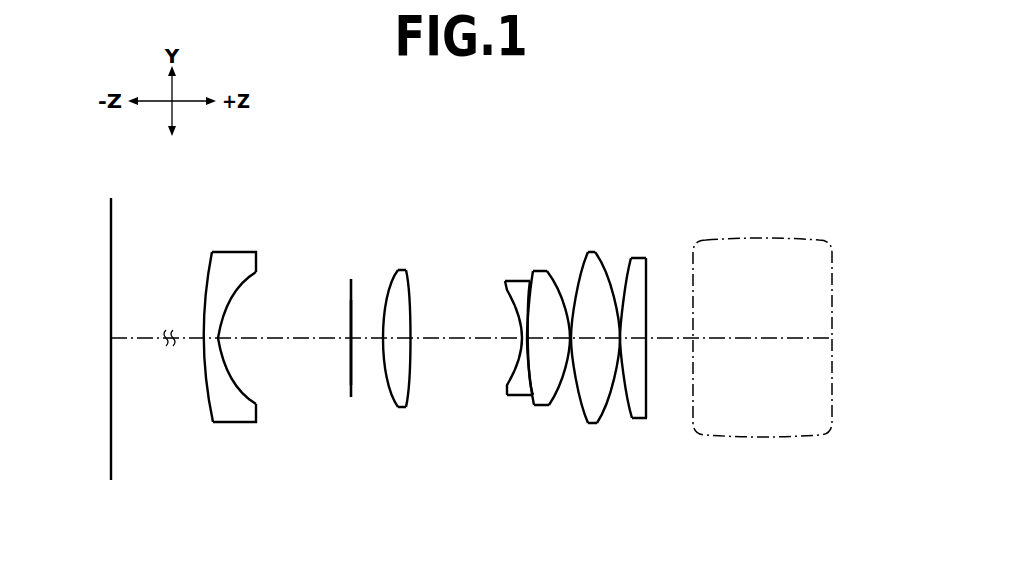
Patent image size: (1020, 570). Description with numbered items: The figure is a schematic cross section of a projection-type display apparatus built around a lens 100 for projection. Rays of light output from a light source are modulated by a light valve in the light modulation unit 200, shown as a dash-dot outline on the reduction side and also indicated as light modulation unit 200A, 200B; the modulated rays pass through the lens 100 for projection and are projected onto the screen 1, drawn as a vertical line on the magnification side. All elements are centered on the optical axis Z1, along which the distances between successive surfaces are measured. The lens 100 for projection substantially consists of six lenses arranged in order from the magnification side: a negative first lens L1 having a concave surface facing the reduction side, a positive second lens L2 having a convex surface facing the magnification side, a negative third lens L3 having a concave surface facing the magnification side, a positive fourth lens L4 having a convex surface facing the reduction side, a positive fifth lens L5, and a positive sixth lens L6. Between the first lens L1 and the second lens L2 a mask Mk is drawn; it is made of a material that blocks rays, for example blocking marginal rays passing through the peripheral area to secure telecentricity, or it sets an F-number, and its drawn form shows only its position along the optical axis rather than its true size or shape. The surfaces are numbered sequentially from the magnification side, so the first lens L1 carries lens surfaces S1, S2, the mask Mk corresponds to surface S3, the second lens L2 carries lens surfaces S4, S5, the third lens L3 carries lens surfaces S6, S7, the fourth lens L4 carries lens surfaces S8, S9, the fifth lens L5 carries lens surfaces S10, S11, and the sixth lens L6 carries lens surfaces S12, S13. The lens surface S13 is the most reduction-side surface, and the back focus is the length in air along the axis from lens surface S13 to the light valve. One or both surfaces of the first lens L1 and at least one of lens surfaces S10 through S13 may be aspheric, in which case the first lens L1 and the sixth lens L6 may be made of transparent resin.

The screen 1 is at (113, 228).
The optical axis Z1 is at (190, 336).
The lens for projection 100 is at (482, 156).
The first lens L1 is at (220, 339).
The second lens L2 is at (378, 348).
The third lens L3 is at (498, 335).
The fourth lens L4 is at (539, 357).
The fifth lens L5 is at (587, 357).
The sixth lens L6 is at (646, 357).
The mask Mk is at (350, 300).
The lens surface S1 is at (212, 402).
The lens surface S2 is at (253, 393).
The surface S3 is at (351, 381).
The lens surface S4 is at (385, 388).
The lens surface S5 is at (410, 393).
The lens surface S6 is at (517, 362).
The lens surface S7 is at (538, 385).
The lens surface S8 is at (537, 410).
The lens surface S9 is at (557, 400).
The lens surface S10 is at (577, 408).
The lens surface S11 is at (612, 400).
The lens surface S12 is at (626, 410).
The lens surface S13 is at (650, 398).
The light modulation unit 200 is at (770, 296).
The light modulation unit 200A is at (762, 337).
The light modulation unit 200B is at (762, 337).